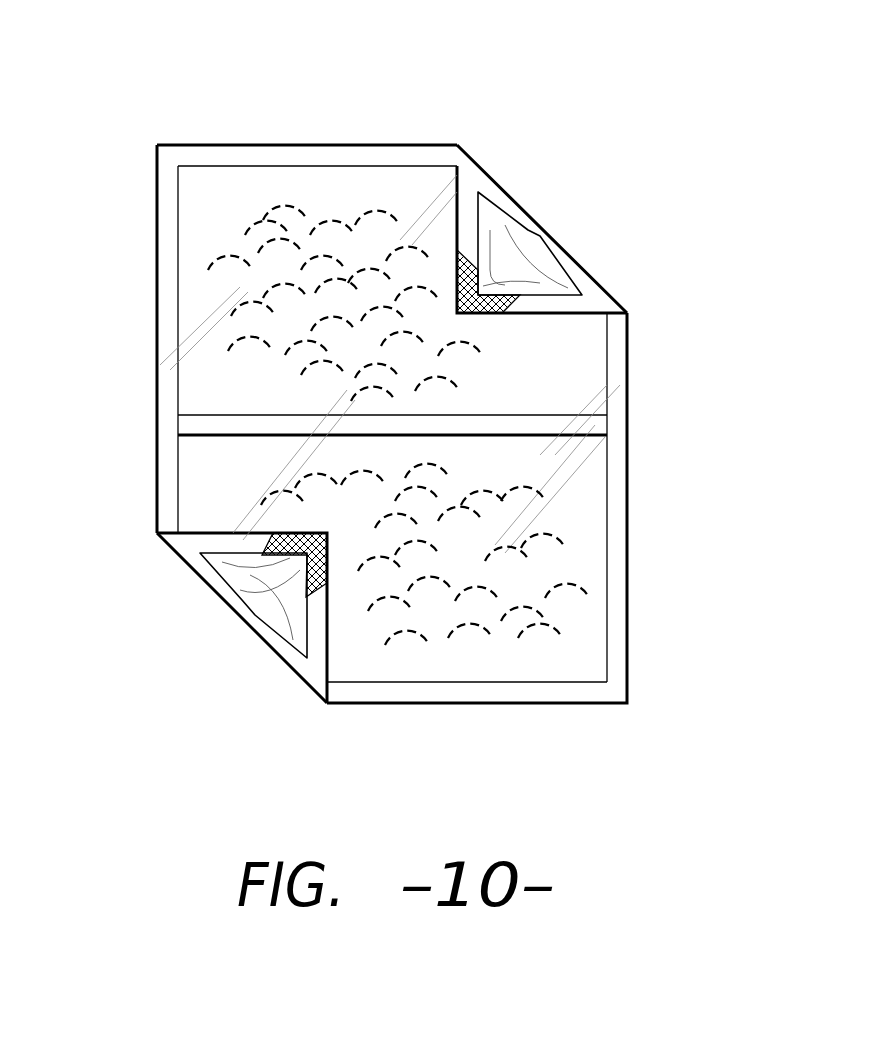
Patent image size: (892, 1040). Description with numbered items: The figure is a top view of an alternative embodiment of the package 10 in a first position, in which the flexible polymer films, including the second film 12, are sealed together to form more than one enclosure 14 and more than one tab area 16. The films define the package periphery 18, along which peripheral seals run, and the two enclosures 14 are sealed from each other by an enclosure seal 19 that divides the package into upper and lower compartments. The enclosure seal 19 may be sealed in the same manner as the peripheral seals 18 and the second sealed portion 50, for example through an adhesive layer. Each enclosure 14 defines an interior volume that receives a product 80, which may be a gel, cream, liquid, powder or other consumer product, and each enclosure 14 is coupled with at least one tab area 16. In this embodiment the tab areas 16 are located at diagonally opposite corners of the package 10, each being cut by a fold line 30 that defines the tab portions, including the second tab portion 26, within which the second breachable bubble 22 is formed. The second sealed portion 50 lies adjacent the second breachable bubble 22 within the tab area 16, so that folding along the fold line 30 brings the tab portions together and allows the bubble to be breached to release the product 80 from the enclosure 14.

The package 10 is at (150, 96).
The second film 12 is at (195, 228).
The enclosure 14 is at (205, 288).
The tab area 16 is at (650, 254).
The package periphery 18 is at (617, 608).
The enclosure seal 19 is at (560, 420).
The second breachable bubble 22 is at (535, 270).
The second tab portion 26 is at (490, 222).
The fold line 30 is at (617, 306).
The second sealed portion 50 is at (467, 203).
The product 80 is at (270, 353).